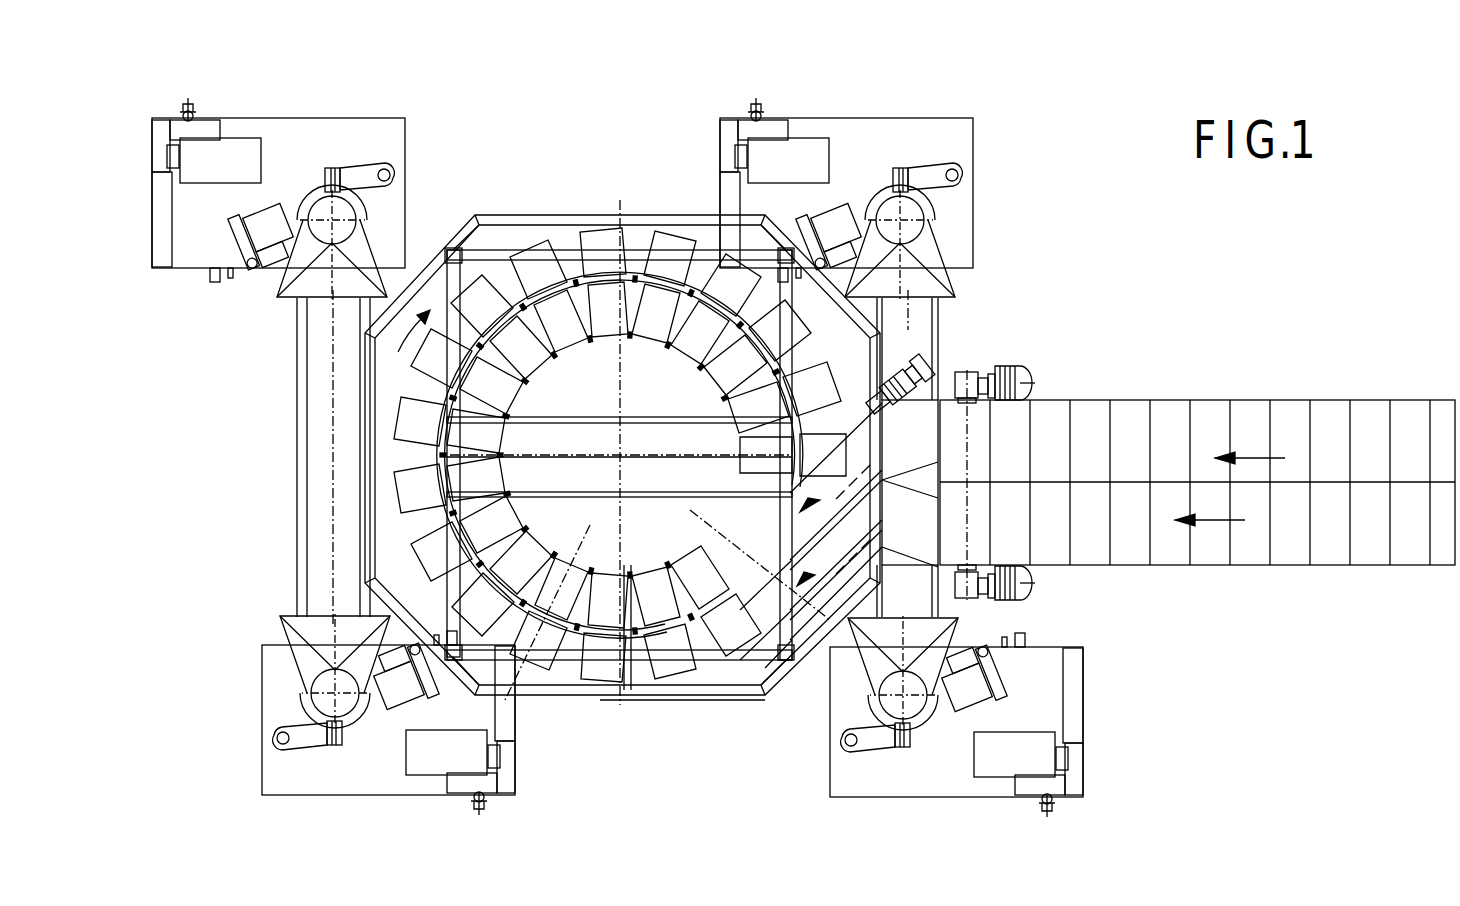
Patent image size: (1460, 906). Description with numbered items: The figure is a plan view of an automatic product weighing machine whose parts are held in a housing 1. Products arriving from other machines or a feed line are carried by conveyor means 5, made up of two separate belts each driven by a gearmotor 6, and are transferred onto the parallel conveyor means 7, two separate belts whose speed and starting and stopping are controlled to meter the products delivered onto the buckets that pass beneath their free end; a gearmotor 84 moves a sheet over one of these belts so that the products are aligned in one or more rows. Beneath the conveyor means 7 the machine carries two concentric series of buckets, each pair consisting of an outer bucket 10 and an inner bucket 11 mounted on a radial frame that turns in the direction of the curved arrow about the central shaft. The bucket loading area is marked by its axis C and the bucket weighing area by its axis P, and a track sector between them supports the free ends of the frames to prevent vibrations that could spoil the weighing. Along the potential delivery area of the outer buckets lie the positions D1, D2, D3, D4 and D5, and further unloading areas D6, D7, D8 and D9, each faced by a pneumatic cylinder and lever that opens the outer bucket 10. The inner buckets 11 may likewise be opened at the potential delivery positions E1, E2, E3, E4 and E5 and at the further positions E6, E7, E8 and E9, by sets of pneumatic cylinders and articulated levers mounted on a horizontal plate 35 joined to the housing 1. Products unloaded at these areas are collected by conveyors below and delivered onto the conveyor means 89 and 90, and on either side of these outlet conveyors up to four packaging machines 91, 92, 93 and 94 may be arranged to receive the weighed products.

The housing 1 is at (485, 212).
The conveyor means 5 is at (1172, 395).
The gearmotor 6 is at (1005, 368).
The parallel conveyor means 7 is at (764, 542).
The outer bucket 10 is at (675, 655).
The inner bucket 11 is at (661, 608).
The horizontal plate 35 is at (597, 407).
The gearmotor 84 is at (915, 362).
The conveyor means 89 is at (295, 418).
The conveyor means 90 is at (945, 318).
The packaging machine 91 is at (255, 706).
The packaging machine 92 is at (278, 110).
The packaging machine 93 is at (1085, 688).
The packaging machine 94 is at (985, 185).
The axis of the bucket loading area C is at (756, 564).
The axis of the bucket weighing area P is at (549, 612).
The potential delivery position of outer bucket D1 is at (492, 625).
The potential delivery position of outer bucket D2 is at (439, 558).
The potential delivery position of outer bucket D3 is at (426, 505).
The potential delivery position of outer bucket D4 is at (426, 435).
The potential delivery position of outer bucket D5 is at (443, 383).
The potential unloading area of outer bucket D6 is at (745, 298).
The potential unloading area of outer bucket D7 is at (820, 353).
The potential unloading area of outer bucket D8 is at (838, 372).
The potential unloading area of outer bucket D9 is at (820, 437).
The potential delivery position of inner bucket E1 is at (529, 583).
The potential delivery position of inner bucket E2 is at (502, 543).
The potential delivery position of inner bucket E3 is at (490, 491).
The potential delivery position of inner bucket E4 is at (490, 452).
The potential delivery position of inner bucket E5 is at (502, 398).
The potential delivery position of inner bucket E6 is at (709, 352).
The potential delivery position of inner bucket E7 is at (746, 391).
The potential delivery position of inner bucket E8 is at (735, 410).
The potential delivery position of inner bucket E9 is at (745, 450).